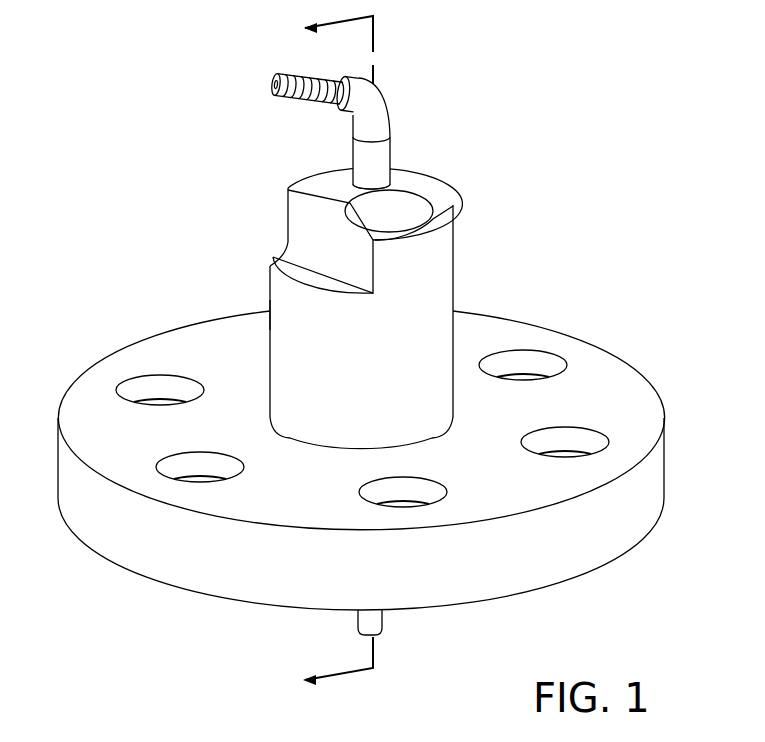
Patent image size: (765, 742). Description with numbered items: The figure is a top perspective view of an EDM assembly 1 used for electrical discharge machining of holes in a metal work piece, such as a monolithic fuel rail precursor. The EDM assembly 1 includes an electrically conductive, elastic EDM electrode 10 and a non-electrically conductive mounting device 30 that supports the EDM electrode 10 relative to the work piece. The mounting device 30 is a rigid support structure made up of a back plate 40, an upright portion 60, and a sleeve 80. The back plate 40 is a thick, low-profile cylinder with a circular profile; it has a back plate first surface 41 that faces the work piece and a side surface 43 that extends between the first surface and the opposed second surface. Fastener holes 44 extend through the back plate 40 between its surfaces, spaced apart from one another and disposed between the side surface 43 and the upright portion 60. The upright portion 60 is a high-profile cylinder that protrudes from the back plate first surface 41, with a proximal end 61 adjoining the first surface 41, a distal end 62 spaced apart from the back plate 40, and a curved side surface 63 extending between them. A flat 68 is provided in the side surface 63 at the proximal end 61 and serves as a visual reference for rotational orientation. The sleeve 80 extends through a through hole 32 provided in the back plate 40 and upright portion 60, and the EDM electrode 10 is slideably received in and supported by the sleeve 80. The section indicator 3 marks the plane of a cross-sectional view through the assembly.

The EDM assembly 1 is at (126, 78).
The section line 3- 3 is at (324, 359).
The EDM electrode 10 is at (303, 95).
The mounting device 30 is at (522, 282).
The through hole 32 is at (351, 172).
The back plate 40 is at (632, 385).
The back plate first surface 41 is at (168, 341).
The side surface 43 is at (563, 570).
The fastener holes 44 is at (547, 362).
The upright portion 60 is at (440, 252).
The proximal end 61 is at (318, 445).
The distal end 62 is at (452, 202).
The curved side surface 63 is at (285, 302).
The flat 68 is at (298, 219).
The sleeve 80 is at (380, 158).